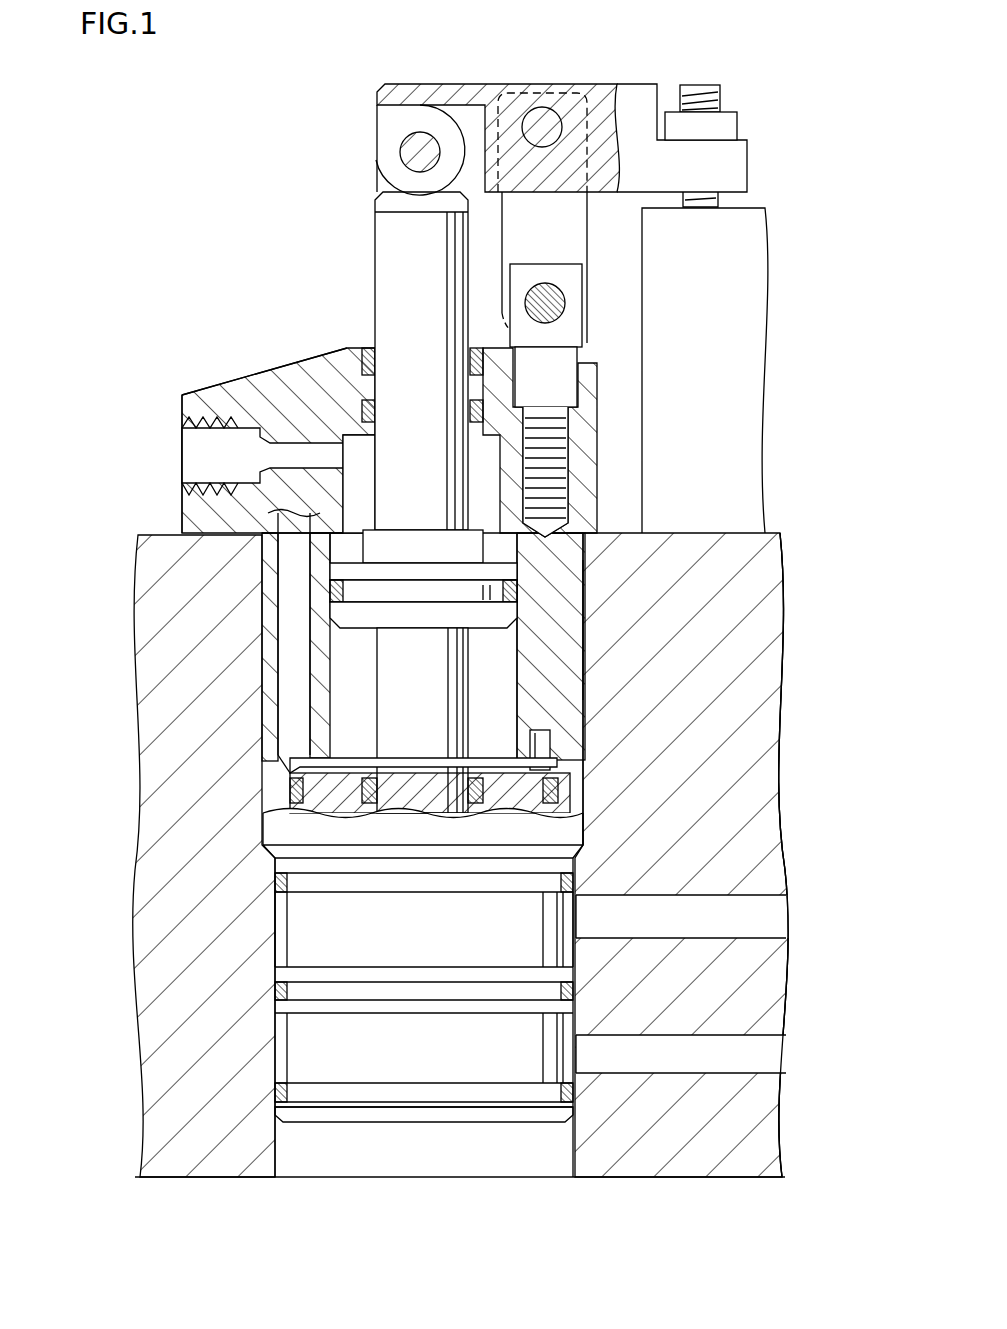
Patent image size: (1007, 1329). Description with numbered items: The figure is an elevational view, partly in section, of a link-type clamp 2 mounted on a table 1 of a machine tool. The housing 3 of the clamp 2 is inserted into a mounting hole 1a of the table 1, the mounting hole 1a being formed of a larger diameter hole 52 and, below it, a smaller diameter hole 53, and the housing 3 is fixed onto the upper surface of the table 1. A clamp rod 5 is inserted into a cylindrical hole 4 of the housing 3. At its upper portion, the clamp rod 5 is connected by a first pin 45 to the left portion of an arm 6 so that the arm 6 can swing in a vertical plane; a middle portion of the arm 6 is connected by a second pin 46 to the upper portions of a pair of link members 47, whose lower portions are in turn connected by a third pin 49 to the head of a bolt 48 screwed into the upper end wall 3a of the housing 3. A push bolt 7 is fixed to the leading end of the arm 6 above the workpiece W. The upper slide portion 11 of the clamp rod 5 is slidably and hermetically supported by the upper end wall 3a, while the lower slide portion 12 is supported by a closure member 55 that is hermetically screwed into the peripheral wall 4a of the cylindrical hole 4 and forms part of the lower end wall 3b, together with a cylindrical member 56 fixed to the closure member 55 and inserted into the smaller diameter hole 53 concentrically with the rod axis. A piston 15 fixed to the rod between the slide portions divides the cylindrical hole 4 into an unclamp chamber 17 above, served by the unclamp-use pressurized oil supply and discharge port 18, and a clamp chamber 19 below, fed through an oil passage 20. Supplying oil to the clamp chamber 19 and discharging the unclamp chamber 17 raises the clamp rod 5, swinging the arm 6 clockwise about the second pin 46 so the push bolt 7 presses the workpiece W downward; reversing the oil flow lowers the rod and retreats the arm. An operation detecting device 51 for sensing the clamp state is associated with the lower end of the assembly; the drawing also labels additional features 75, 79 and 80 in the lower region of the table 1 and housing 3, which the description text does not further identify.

The table 1 is at (768, 690).
The mounting hole 1a is at (570, 571).
The clamp 2 is at (255, 250).
The housing 3 is at (240, 375).
The upper end wall 3a is at (330, 352).
The lower end wall 3b is at (277, 830).
The cylindrical hole 4 is at (508, 688).
The peripheral wall 4a is at (570, 660).
The clamp rod 5 is at (372, 232).
The arm 6 is at (625, 84).
The push bolt 7 is at (700, 100).
The upper slide portion 11 is at (388, 387).
The lower slide portion 12 is at (422, 835).
The piston 15 is at (422, 605).
The unclamp chamber 17 is at (365, 460).
The unclamp-use pressurized oil supply and discharge port 18 is at (195, 453).
The clamp chamber 19 is at (372, 730).
The oil passage 20 is at (292, 632).
The first pin 45 is at (420, 148).
The second pin 46 is at (540, 122).
The link member 47 is at (588, 228).
The bolt 48 is at (578, 362).
The third pin 49 is at (565, 303).
The operation detecting device 51 is at (270, 1047).
The larger diameter hole 52 is at (570, 618).
The smaller diameter hole 53 is at (566, 1135).
The closure member 55 is at (333, 785).
The cylindrical member 56 is at (430, 1122).
The port 75 is at (780, 916).
The port 79 is at (785, 1053).
The stopper 80 is at (545, 745).
The workpiece W is at (752, 373).